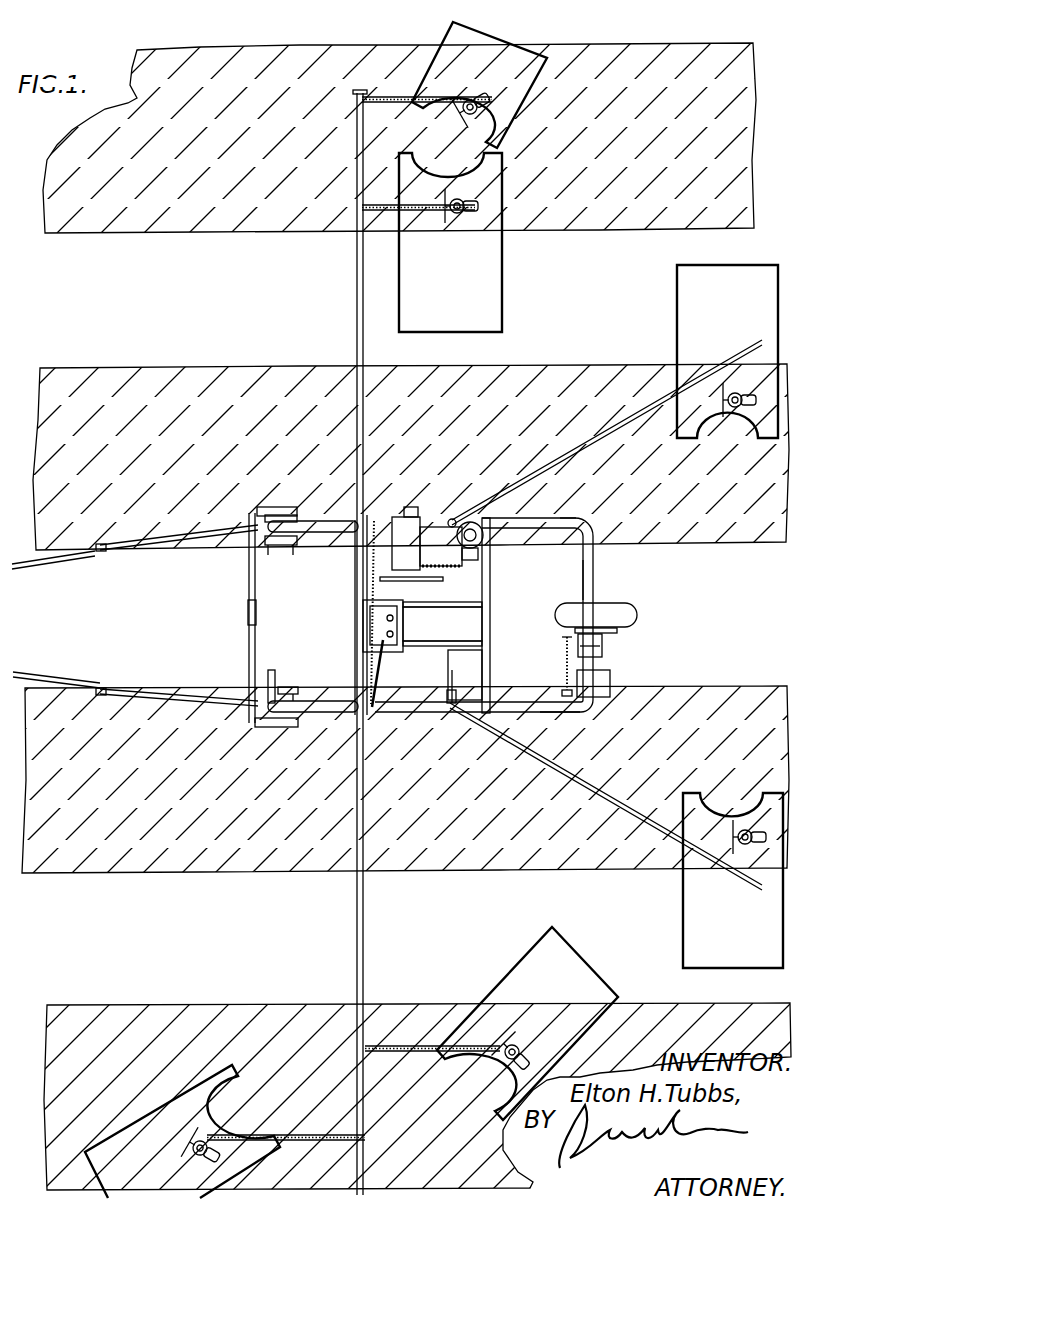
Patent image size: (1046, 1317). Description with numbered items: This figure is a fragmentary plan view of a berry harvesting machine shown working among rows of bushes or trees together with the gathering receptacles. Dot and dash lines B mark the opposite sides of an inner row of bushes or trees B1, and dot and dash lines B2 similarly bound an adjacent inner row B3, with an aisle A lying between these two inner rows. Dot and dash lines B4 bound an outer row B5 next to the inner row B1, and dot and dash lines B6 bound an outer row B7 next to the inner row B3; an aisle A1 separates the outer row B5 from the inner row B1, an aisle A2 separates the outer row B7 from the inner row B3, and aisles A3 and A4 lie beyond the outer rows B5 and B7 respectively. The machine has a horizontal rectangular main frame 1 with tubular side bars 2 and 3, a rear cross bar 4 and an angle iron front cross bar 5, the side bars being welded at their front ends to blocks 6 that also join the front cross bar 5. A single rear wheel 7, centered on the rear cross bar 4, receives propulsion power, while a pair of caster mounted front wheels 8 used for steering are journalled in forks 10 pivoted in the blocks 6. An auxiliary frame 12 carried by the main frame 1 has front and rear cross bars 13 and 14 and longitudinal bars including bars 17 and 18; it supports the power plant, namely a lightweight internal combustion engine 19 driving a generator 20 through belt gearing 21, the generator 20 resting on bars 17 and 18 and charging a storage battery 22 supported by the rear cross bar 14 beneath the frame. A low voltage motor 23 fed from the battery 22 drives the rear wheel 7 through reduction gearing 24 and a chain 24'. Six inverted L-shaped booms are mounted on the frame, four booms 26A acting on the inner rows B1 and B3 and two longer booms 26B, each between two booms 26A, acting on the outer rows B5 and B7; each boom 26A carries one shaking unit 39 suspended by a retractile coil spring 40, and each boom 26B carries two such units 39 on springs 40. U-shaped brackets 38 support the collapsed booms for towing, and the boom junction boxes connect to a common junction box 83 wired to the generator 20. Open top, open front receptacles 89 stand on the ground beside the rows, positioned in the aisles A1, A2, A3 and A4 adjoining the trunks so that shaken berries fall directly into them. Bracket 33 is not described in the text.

The main frame 1 is at (528, 518).
The side bar 2 is at (563, 518).
The side bar 3 is at (559, 713).
The rear cross bar 4 is at (590, 590).
The front cross bar 5 is at (249, 599).
The block 6 is at (258, 540).
The rear wheel 7 is at (618, 590).
The front wheel 8 is at (312, 538).
The fork 10 is at (276, 548).
The auxiliary frame 12 is at (355, 591).
The front cross bar 13 is at (366, 613).
The rear cross bar 14 is at (490, 586).
The longitudinal bar 17 is at (470, 606).
The longitudinal bar 18 is at (470, 642).
The internal combustion engine 19 is at (428, 517).
The generator 20 is at (403, 628).
The belt gearing 21 is at (425, 581).
The storage battery 22 is at (470, 668).
The motor 23 is at (604, 682).
The reduction gearing 24 is at (612, 645).
The chain 24' is at (552, 666).
The boom 26A is at (612, 444).
The boom 26B is at (357, 298).
The bracket 33 is at (256, 613).
The U-shaped bracket 38 is at (452, 690).
The shaking unit 39 is at (472, 118).
The retractile coil spring 40 is at (385, 103).
The common junction box 83 is at (375, 623).
The receptacle 89 is at (493, 47).
The aisle A is at (211, 612).
The aisle A1 is at (228, 297).
The aisle A2 is at (213, 937).
The aisle A3 is at (236, 37).
The aisle A4 is at (233, 1199).
The dot and dash lines B is at (186, 351).
The inner row of bushes or trees B1 is at (205, 551).
The dot and dash lines B2 is at (172, 688).
The inner row of bushes or trees B3 is at (198, 688).
The dot and dash lines B4 is at (172, 245).
The outer row of bushes or trees B5 is at (218, 193).
The dot and dash lines B6 is at (170, 1005).
The outer row of bushes or trees B7 is at (198, 1037).